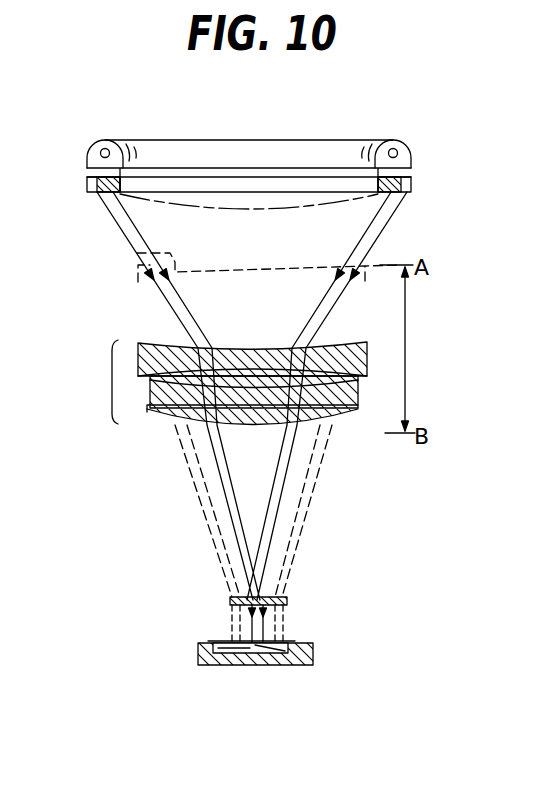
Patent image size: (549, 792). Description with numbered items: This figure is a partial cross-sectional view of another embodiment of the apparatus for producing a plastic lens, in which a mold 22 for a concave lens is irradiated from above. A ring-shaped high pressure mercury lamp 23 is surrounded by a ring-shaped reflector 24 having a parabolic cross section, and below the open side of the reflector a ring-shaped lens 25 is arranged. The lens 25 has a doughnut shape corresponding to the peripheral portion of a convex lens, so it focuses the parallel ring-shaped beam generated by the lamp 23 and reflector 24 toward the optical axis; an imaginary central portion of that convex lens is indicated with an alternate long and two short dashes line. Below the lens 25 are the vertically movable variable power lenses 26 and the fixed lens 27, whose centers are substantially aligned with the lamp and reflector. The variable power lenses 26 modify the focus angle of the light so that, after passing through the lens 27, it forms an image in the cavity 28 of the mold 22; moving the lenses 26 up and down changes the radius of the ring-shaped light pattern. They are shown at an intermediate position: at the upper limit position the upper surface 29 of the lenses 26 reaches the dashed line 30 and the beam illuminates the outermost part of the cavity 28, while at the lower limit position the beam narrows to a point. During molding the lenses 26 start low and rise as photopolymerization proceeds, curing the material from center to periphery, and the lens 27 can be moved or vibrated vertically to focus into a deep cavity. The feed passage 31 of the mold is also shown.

The mold 22 is at (372, 645).
The ring-shaped high pressure mercury lamp 23 is at (102, 147).
The ring-shaped reflector 24 is at (410, 162).
The ring-shaped lens 25 is at (412, 179).
The variable power lenses 26 is at (112, 380).
The fixed lens 27 is at (287, 598).
The cavity 28 is at (235, 658).
The upper surface 29 is at (138, 342).
The dashed line 30 is at (137, 253).
The feed passage 31 is at (208, 640).